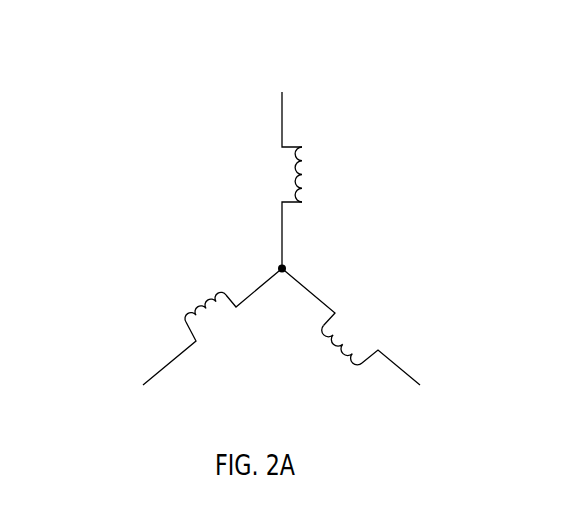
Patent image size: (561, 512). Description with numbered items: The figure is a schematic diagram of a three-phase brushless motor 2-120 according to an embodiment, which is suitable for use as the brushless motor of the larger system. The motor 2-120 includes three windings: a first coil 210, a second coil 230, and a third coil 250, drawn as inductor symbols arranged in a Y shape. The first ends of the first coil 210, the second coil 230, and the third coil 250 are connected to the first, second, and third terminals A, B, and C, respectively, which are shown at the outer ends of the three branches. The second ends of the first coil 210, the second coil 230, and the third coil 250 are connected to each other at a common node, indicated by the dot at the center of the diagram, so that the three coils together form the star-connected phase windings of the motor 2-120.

The three-phase brushless motor 2-120 is at (108, 48).
The first coil 210 is at (303, 156).
The second coil 230 is at (186, 322).
The third coil 250 is at (345, 343).